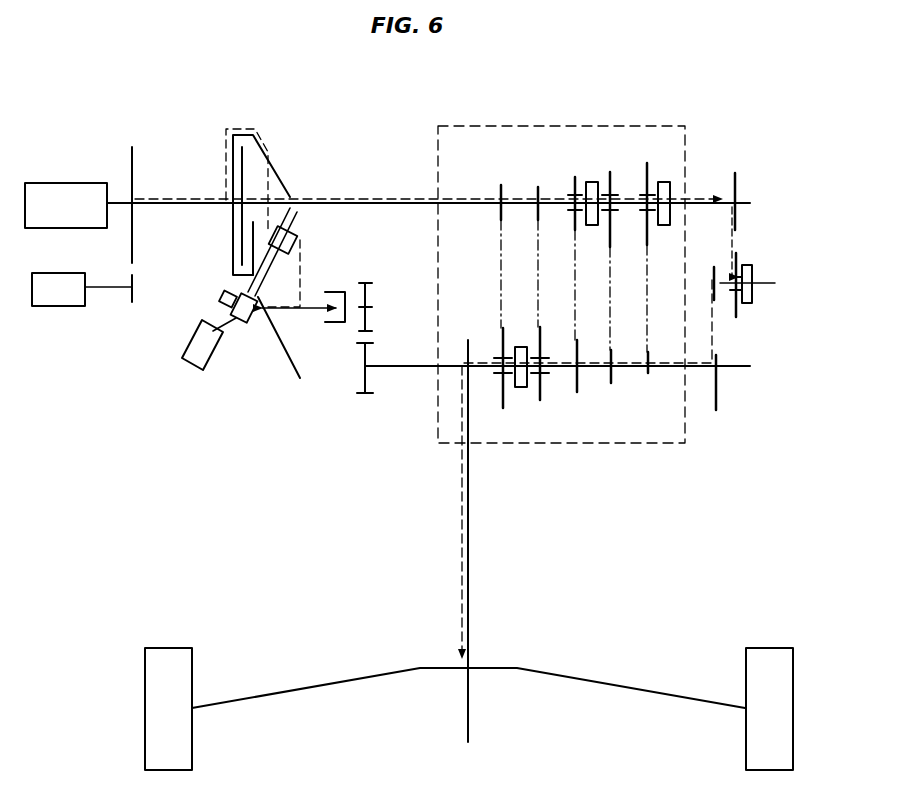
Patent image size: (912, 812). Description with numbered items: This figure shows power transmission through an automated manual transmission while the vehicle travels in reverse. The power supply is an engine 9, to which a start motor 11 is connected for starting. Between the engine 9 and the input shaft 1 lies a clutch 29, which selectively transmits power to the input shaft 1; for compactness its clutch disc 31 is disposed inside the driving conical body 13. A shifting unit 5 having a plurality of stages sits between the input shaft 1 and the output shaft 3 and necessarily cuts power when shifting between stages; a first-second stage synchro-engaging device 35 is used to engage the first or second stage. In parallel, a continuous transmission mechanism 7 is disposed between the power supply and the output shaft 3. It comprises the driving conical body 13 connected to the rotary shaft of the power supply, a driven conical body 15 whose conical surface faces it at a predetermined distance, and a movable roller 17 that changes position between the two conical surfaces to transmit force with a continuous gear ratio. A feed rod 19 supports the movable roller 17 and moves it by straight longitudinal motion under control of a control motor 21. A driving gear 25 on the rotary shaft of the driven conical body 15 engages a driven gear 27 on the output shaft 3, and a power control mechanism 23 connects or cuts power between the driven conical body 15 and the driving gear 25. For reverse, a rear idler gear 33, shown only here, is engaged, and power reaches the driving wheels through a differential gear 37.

The input shaft 1 is at (712, 198).
The output shaft 3 is at (732, 370).
The shifting unit 5 is at (630, 126).
The continuous transmission mechanism 7 is at (216, 231).
The engine 9 is at (62, 183).
The start motor 11 is at (60, 306).
The driving conical body 13 is at (262, 142).
The driven conical body 15 is at (283, 353).
The movable roller 17 is at (293, 238).
The feed rod 19 is at (236, 300).
The control motor 21 is at (196, 358).
The power control mechanism 23 is at (338, 325).
The driving gear 25 is at (368, 282).
The driven gear 27 is at (365, 395).
The clutch 29 is at (236, 143).
The clutch disc 31 is at (243, 180).
The rear idler gear 33 is at (739, 310).
The first-second stage synchro-engaging device 35 is at (521, 392).
The differential gear 37 is at (493, 650).